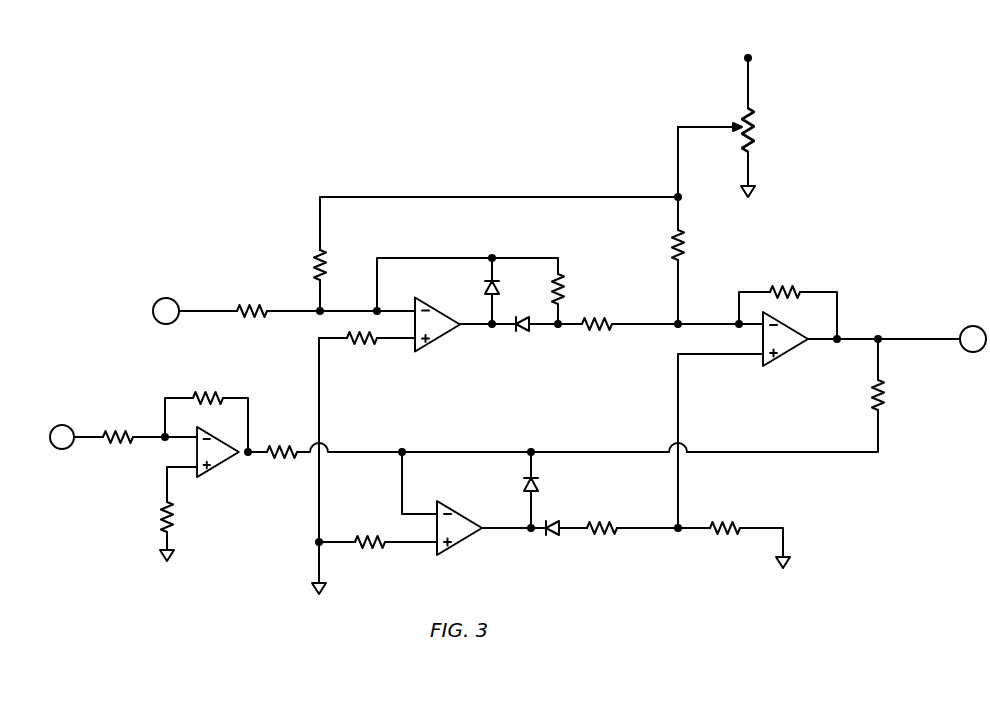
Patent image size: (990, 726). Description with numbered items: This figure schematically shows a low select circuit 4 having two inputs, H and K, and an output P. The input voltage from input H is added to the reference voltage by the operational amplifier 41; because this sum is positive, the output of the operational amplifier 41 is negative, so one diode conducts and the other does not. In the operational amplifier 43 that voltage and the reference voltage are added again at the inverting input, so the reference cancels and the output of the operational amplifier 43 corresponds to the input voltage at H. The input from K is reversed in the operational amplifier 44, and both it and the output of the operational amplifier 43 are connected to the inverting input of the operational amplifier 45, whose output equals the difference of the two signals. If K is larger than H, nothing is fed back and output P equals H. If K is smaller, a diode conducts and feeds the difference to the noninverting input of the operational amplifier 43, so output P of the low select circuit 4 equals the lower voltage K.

The low select circuit 4 is at (866, 205).
The operational amplifier 41 is at (433, 316).
The operational amplifier 43 is at (792, 342).
The operational amplifier 44 is at (222, 456).
The operational amplifier 45 is at (452, 537).